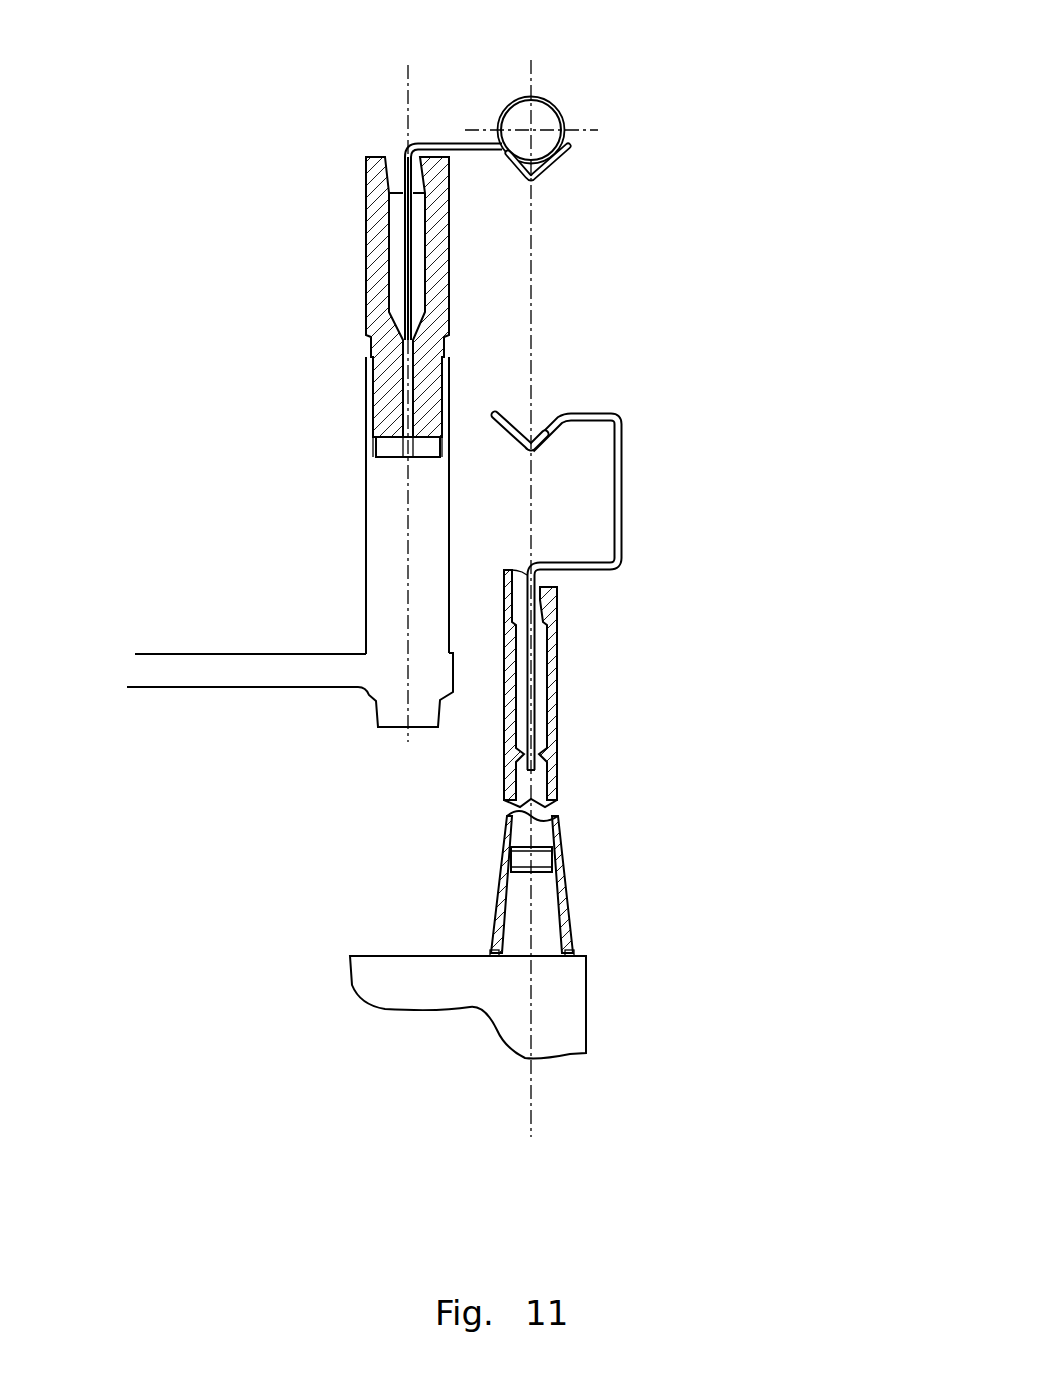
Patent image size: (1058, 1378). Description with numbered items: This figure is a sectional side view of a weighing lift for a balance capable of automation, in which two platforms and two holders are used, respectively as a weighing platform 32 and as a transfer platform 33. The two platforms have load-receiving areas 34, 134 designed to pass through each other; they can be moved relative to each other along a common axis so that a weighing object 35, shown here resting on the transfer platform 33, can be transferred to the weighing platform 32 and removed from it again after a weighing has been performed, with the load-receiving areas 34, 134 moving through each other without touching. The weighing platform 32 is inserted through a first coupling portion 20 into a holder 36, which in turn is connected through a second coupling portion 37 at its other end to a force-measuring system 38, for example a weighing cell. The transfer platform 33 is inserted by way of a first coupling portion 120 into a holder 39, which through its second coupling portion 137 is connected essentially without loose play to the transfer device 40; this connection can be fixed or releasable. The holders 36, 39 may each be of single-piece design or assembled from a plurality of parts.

The transfer platform 33 is at (440, 98).
The weighing object 35 is at (543, 118).
The load-receiving area 34 is at (555, 161).
The first coupling portion 120 is at (365, 182).
The holder 39 is at (305, 239).
The second coupling portion 137 is at (388, 397).
The load-receiving area 134 is at (505, 425).
The weighing platform 32 is at (643, 475).
The first coupling portion 20 is at (557, 607).
The holder 36 is at (607, 681).
The transfer device 40 is at (252, 671).
The second coupling portion 37 is at (596, 848).
The force-measuring system 38 is at (562, 1002).